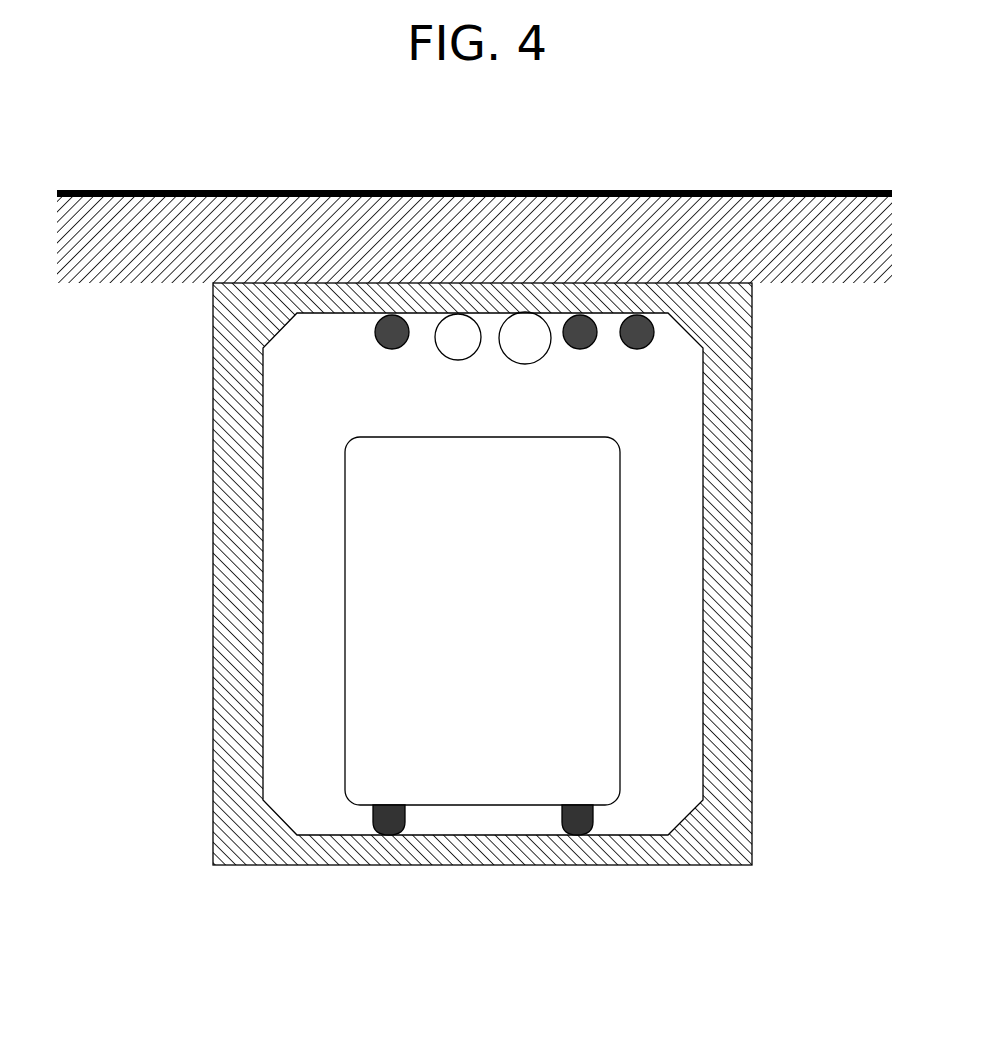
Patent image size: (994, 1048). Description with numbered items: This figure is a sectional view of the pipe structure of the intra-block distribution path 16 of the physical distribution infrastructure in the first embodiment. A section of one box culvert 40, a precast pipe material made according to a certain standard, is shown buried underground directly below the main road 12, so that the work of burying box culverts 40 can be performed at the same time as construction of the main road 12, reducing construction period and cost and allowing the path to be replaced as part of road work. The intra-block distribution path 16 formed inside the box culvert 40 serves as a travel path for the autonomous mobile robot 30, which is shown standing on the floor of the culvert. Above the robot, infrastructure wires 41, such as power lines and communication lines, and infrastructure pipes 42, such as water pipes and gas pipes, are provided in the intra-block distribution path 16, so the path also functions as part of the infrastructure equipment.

The main road 12 is at (595, 190).
The box culvert 40 is at (752, 417).
The intra-block distribution path 16 is at (292, 437).
The infrastructure wires 41 is at (393, 350).
The infrastructure pipes 42 is at (457, 361).
The autonomous mobile robot 30 is at (435, 620).